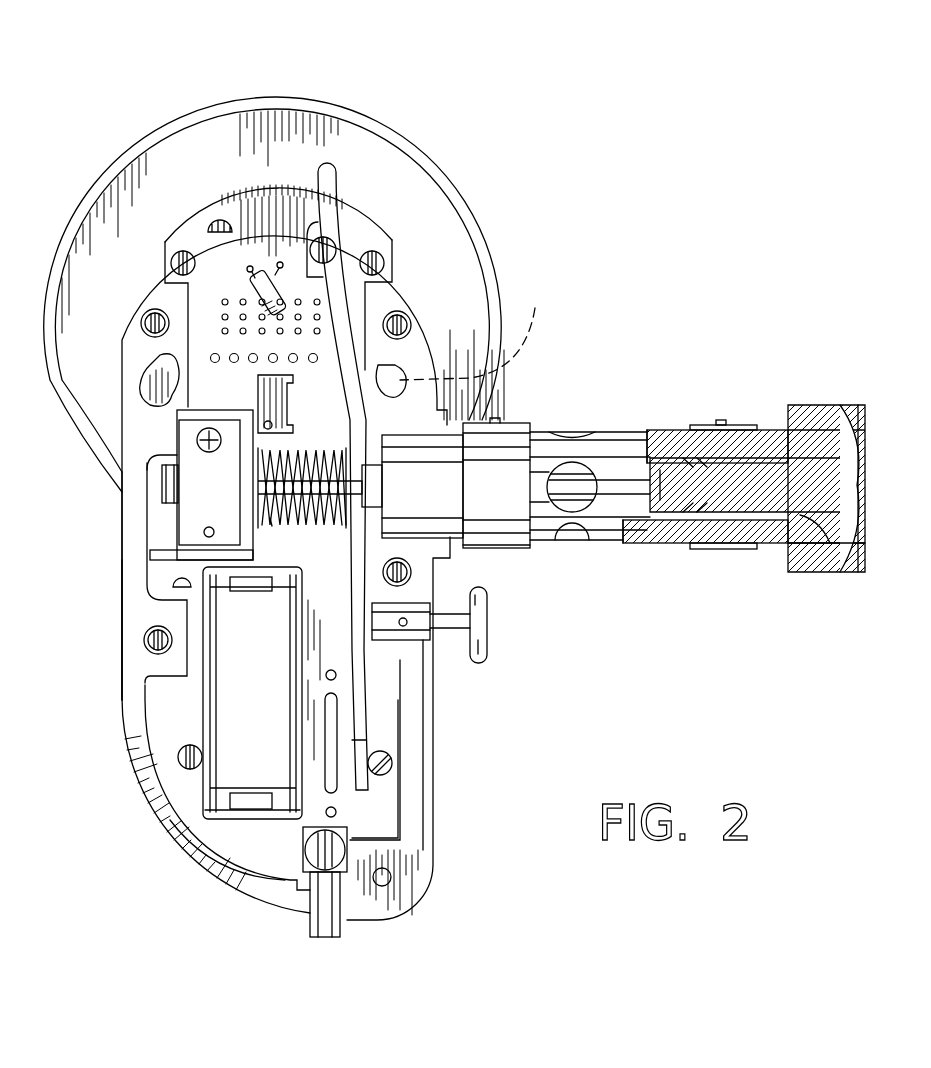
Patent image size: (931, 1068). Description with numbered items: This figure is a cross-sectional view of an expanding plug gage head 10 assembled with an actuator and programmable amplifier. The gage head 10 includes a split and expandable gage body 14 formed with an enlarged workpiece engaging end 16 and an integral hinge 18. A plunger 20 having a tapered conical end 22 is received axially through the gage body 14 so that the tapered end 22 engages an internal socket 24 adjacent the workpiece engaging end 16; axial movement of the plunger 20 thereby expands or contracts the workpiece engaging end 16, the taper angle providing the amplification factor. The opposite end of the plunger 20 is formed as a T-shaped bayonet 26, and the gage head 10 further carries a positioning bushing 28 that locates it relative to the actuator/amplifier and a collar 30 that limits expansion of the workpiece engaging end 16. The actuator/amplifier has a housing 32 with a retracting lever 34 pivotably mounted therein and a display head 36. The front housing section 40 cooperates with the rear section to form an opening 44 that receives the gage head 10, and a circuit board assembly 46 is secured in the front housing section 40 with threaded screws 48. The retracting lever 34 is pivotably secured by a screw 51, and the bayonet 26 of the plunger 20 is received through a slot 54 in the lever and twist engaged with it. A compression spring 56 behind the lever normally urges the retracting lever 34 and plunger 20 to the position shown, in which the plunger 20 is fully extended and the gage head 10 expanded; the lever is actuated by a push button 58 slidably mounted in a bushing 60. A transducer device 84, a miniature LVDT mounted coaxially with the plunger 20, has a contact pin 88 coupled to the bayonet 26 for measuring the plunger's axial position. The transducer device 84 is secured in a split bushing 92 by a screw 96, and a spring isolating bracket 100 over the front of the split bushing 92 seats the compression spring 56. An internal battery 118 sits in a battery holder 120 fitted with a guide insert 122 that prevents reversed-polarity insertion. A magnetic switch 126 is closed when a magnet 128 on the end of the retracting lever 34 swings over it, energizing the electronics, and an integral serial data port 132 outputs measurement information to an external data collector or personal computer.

The expanding plug gage head 10 is at (672, 410).
The gage body 14 is at (652, 418).
The workpiece engaging end 16 is at (808, 403).
The integral hinge 18 is at (567, 462).
The plunger 20 is at (658, 515).
The tapered conical end 22 is at (822, 540).
The internal socket 24 is at (848, 432).
The T-shaped bayonet 26 is at (325, 528).
The positioning bushing 28 is at (507, 423).
The collar 30 is at (712, 551).
The housing 32 is at (114, 730).
The retracting lever 34 is at (437, 298).
The display head 36 is at (205, 95).
The front housing section 40 is at (130, 628).
The opening 44 is at (450, 547).
The circuit board assembly 46 is at (262, 848).
The threaded screws 48 is at (178, 252).
The screw 51 is at (325, 185).
The slot 54 is at (476, 328).
The compression spring 56 is at (272, 518).
The push button 58 is at (478, 658).
The bushing 60 is at (400, 603).
The transducer device 84 is at (140, 468).
The contact pin 88 is at (320, 470).
The split bushing 92 is at (190, 527).
The screw 96 is at (195, 442).
The spring isolating bracket 100 is at (150, 555).
The battery 118 is at (225, 703).
The battery holder 120 is at (235, 818).
The guide insert 122 is at (207, 578).
The switch 126 is at (395, 855).
The magnet 128 is at (368, 732).
The RS-232 port 132 is at (345, 925).